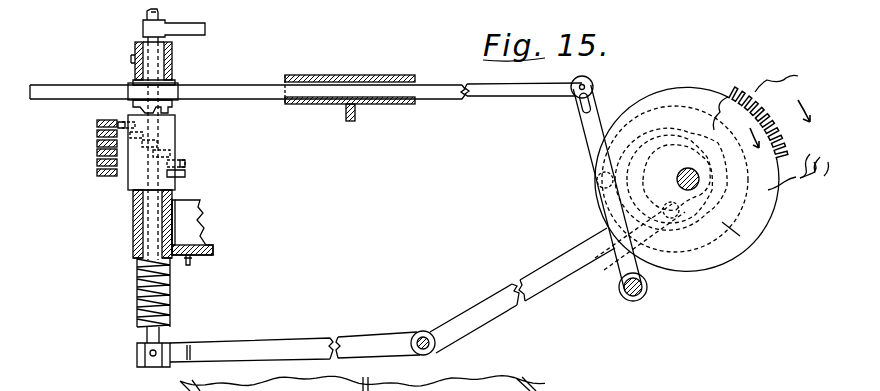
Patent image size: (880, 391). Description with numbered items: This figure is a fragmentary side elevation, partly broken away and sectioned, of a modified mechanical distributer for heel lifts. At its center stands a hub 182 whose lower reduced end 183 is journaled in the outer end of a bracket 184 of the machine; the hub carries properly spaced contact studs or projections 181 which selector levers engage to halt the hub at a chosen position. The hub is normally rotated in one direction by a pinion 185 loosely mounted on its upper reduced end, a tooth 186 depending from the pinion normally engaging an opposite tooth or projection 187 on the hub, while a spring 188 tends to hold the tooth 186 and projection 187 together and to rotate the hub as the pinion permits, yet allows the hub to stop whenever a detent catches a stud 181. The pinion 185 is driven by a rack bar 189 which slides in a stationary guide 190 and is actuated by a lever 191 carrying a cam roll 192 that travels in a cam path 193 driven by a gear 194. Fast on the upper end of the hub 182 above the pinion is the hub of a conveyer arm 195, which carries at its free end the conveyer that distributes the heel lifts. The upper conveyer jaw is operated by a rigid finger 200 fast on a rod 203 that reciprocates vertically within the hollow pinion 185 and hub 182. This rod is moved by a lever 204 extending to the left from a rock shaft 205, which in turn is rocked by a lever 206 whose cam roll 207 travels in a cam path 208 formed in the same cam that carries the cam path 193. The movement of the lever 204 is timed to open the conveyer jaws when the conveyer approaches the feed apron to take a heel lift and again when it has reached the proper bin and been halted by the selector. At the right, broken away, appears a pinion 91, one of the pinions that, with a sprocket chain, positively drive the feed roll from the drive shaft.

The rod 203 is at (146, 14).
The rigid finger 200 is at (203, 24).
The conveyer arm 195 is at (172, 63).
The rack bar 189 is at (245, 90).
The stationary guide 190 is at (357, 77).
The pinion 185 is at (133, 103).
The tooth 186 is at (133, 108).
The tooth or projection 187 is at (170, 104).
The contact studs 181 is at (188, 173).
The hub 182 is at (135, 178).
The bracket 184 is at (195, 226).
The lower reduced end 183 is at (135, 259).
The spring 188 is at (137, 288).
The lever 204 is at (285, 325).
The rock shaft 205 is at (423, 330).
The lever 206 is at (487, 313).
The lever 191 is at (597, 148).
The cam roll 192 is at (612, 182).
The cam path 193 is at (627, 118).
The gear 194 is at (722, 94).
The cam roll 207 is at (681, 223).
The cam path 208 is at (740, 236).
The pinion 91 is at (812, 184).